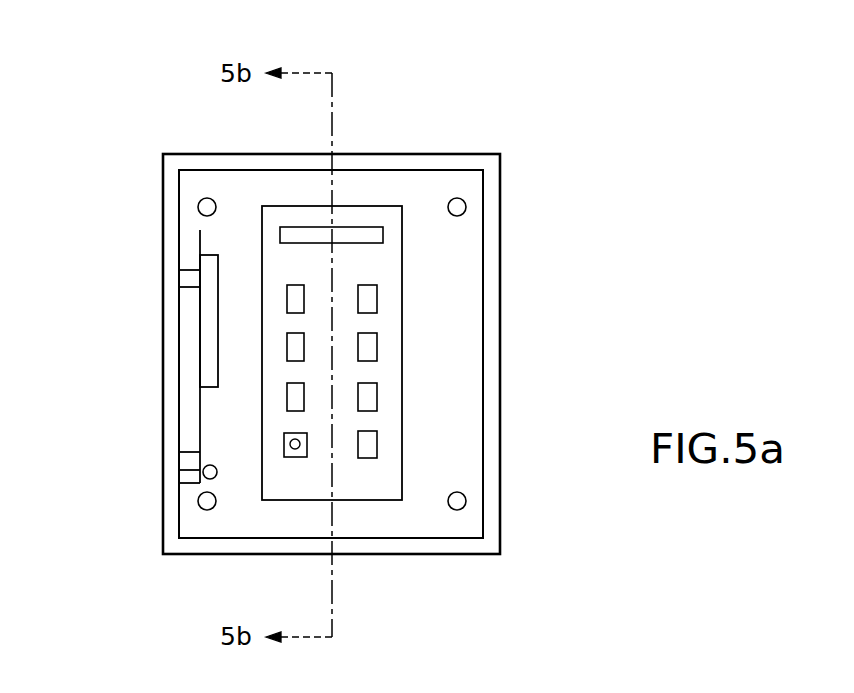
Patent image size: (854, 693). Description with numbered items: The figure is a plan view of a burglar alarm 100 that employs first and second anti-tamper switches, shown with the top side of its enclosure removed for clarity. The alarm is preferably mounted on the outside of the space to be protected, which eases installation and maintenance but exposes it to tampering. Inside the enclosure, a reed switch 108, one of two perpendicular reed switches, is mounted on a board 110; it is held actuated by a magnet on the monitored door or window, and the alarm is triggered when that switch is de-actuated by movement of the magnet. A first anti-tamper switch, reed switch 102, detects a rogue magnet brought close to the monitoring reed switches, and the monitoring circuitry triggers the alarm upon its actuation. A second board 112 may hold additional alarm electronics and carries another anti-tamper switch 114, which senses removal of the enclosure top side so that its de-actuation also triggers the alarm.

The burglar alarm 100 is at (518, 610).
The reed switch 102 is at (208, 313).
The reed switch 108 is at (212, 466).
The board 110 is at (200, 483).
The second board 112 is at (358, 210).
The anti-tamper switch 114 is at (295, 457).